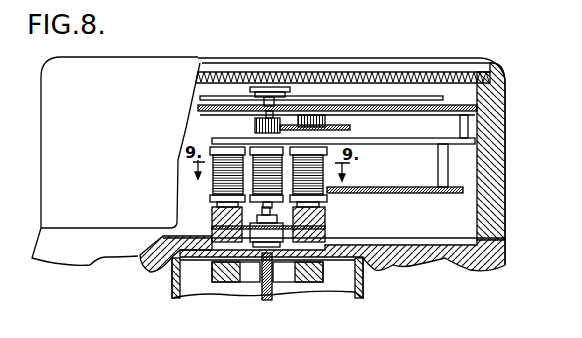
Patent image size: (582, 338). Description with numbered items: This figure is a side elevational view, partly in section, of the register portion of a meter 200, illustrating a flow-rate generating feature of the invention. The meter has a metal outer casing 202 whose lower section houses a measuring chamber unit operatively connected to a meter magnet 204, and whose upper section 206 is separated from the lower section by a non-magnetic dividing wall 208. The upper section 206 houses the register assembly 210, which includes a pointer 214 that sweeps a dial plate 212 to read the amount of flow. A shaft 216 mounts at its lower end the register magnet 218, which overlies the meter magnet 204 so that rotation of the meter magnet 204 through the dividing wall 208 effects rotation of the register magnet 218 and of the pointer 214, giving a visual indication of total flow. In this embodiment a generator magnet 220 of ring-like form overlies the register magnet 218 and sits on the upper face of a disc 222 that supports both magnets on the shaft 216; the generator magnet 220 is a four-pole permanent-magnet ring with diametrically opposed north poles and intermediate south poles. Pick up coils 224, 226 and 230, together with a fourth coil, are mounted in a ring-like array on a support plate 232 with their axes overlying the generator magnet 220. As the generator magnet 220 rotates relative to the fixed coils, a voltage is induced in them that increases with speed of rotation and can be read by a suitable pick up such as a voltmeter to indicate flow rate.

The meter 200 is at (507, 77).
The metal outer casing 202 is at (552, 125).
The meter magnet 204 is at (227, 282).
The upper section 206 is at (50, 113).
The non-magnetic dividing wall 208 is at (423, 263).
The register assembly 210 is at (443, 115).
The dial plate 212 is at (455, 105).
The pointer 214 is at (373, 96).
The shaft 216 is at (258, 100).
The register magnet 218 is at (153, 243).
The generator magnet 220 is at (325, 212).
The disc 222 is at (215, 225).
The pick up coil 224 is at (263, 165).
The pick up coil 226 is at (328, 192).
The pick up coil 230 is at (213, 184).
The support plate 232 is at (422, 145).